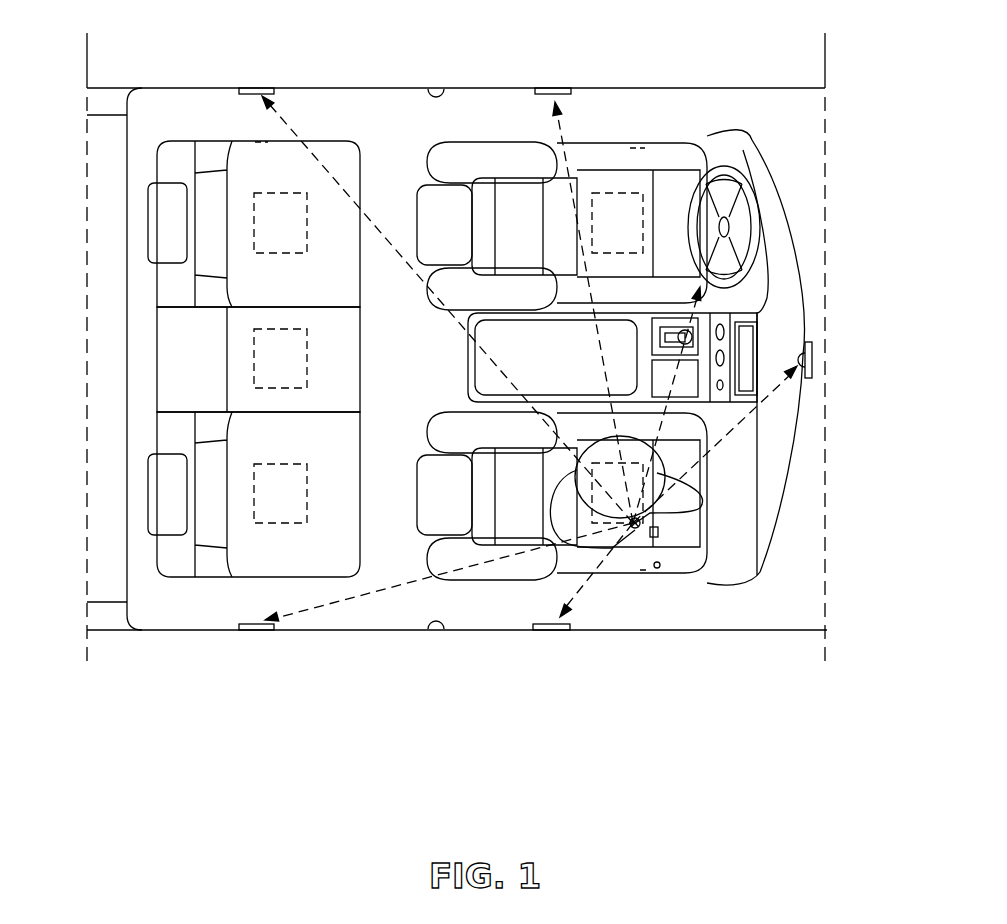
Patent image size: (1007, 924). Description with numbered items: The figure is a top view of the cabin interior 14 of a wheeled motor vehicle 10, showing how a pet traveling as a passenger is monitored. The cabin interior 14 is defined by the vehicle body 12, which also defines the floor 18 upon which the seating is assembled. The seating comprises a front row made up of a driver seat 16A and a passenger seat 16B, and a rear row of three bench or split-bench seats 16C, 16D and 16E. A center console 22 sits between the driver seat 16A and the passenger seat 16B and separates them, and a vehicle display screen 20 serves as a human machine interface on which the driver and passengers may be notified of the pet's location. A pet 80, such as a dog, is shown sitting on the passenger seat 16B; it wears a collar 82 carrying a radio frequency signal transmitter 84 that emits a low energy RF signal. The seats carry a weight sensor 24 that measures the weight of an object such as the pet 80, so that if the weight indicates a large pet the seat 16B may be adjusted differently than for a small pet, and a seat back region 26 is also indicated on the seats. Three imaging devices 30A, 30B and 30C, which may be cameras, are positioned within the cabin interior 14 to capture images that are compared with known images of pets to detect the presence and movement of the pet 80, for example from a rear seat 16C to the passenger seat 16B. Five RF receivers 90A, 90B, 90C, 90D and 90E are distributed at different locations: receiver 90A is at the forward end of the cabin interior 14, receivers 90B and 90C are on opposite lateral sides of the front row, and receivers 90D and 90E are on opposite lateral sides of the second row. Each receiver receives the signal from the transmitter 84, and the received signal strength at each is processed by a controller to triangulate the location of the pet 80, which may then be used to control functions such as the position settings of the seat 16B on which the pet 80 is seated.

The vehicle 10 is at (840, 75).
The vehicle body 12 is at (723, 632).
The cabin interior 14 is at (378, 602).
The driver seat 16A is at (593, 158).
The passenger seat 16B is at (505, 567).
The rear seat 16C is at (173, 163).
The rear seat 16D is at (173, 368).
The rear seat 16E is at (173, 555).
The floor 18 is at (397, 157).
The vehicle display screen 20 is at (748, 388).
The center console 22 is at (713, 277).
The weight sensor 24 is at (272, 227).
The seat back 26 is at (258, 147).
The imaging device 30A is at (800, 358).
The imaging device 30B is at (428, 98).
The imaging device 30C is at (428, 625).
The pet 80 is at (720, 512).
The collar 82 is at (630, 528).
The RF signal transmitter 84 is at (657, 567).
The RF receiver 90A is at (813, 362).
The RF receiver 90B is at (553, 88).
The RF receiver 90C is at (552, 632).
The RF receiver 90D is at (258, 83).
The RF receiver 90E is at (253, 632).